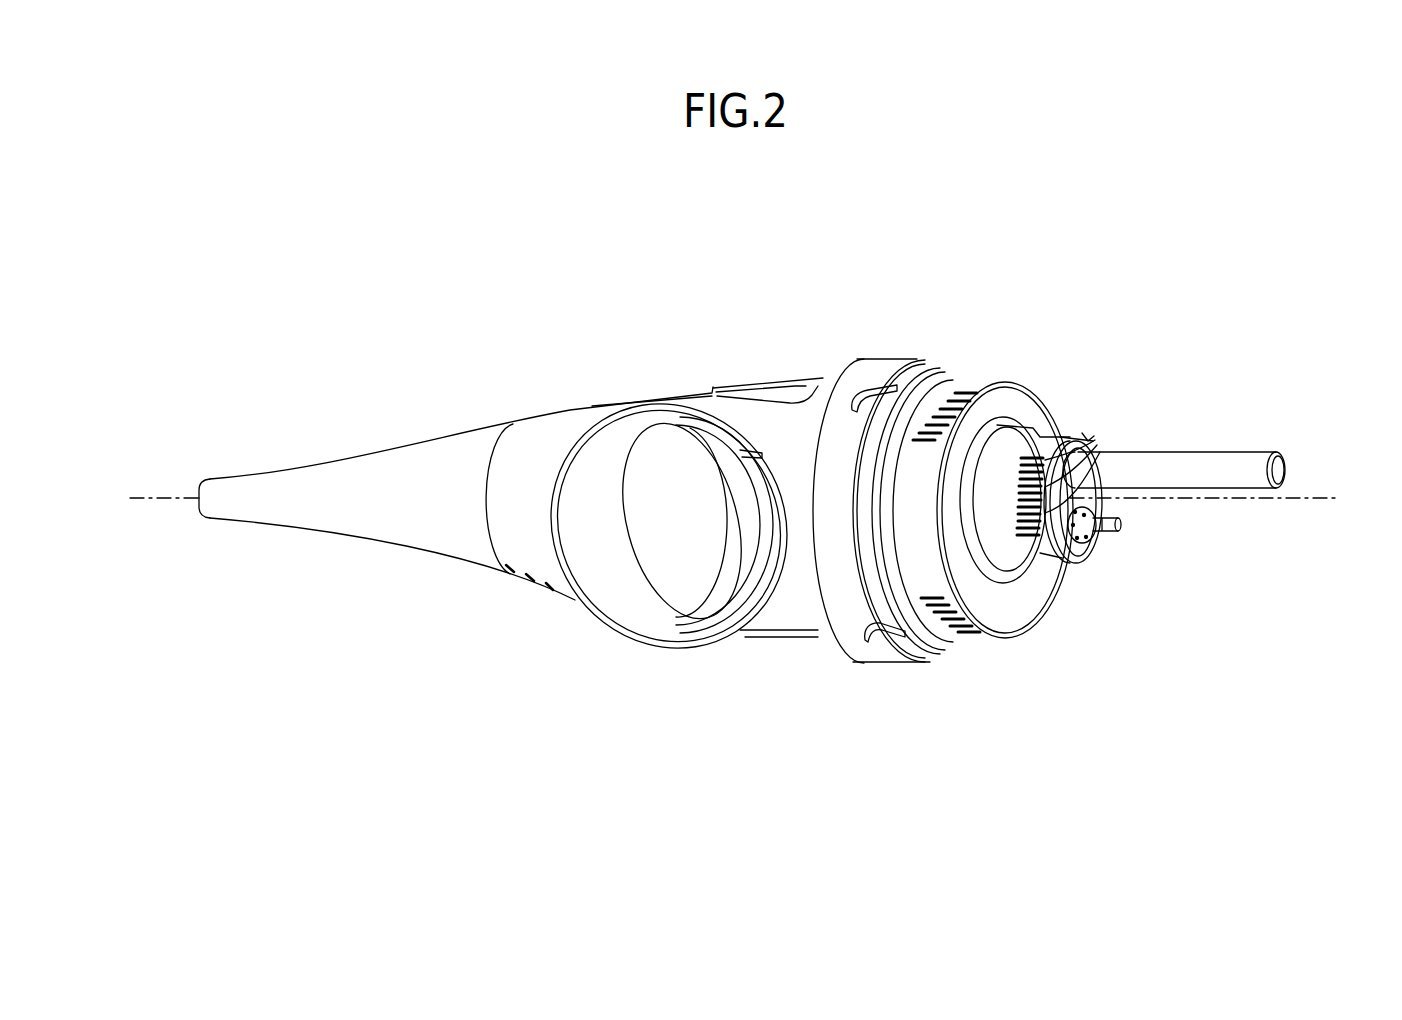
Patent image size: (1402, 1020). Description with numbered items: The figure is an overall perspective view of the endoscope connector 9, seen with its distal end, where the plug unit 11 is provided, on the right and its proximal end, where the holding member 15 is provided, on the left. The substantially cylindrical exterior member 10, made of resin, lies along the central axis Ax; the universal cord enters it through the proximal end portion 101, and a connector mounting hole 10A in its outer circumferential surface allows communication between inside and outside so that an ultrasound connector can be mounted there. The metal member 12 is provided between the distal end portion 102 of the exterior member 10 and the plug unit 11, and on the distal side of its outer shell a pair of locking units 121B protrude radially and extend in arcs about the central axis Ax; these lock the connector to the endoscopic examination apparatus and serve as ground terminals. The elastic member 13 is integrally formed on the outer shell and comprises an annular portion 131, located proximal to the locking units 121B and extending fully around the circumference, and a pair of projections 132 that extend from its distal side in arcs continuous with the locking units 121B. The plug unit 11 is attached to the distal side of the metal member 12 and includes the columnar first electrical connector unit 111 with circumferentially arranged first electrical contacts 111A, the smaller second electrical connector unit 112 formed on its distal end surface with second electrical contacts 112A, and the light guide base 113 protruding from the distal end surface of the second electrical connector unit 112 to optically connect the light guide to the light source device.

The endoscope connector 9 is at (857, 221).
The central axis Ax is at (165, 498).
The holding member 15 is at (375, 522).
The proximal end portion 101 is at (507, 590).
The connector mounting hole 10A is at (707, 612).
The exterior member 10 is at (788, 618).
The elastic member 13 is at (853, 617).
The annular portion 131 is at (865, 378).
The projection 132 is at (831, 563).
The distal end portion 102 is at (878, 352).
The metal member 12 is at (915, 363).
The locking unit 121B is at (940, 362).
The plug unit 11 is at (1003, 625).
The first electrical contact 111A is at (995, 395).
The first electrical connector unit 111 is at (1045, 390).
The second electrical contact 112A is at (1157, 409).
The second electrical connector unit 112 is at (1100, 545).
The light guide base 113 is at (1240, 462).